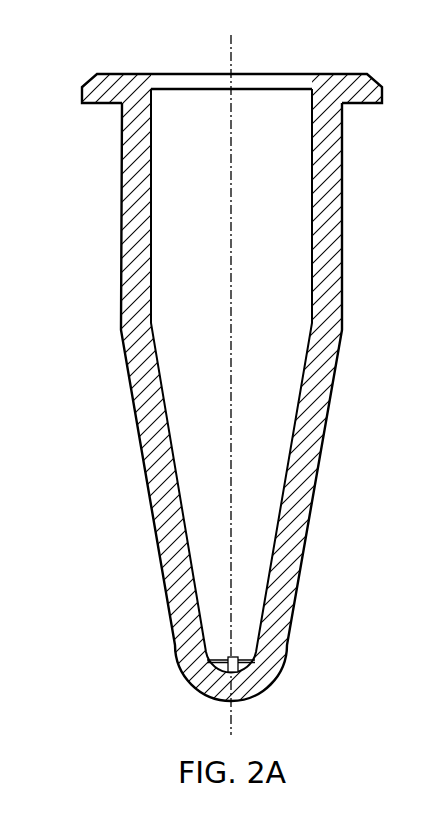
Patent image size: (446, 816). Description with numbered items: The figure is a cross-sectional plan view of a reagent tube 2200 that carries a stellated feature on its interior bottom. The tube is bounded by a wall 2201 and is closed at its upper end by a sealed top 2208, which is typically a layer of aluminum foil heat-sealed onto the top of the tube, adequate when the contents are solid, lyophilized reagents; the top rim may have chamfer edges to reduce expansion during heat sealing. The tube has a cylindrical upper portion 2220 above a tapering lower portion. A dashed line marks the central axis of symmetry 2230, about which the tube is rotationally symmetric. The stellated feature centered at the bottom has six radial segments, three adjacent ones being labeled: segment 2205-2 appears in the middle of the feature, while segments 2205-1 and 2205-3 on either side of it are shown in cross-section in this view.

The reagent tube 2200 is at (108, 504).
The wall 2201 is at (325, 340).
The sealed top 2208 is at (270, 82).
The cylindrical upper portion 2220 is at (325, 188).
The central axis of symmetry 2230 is at (228, 58).
The radial segment 2205-1 is at (218, 663).
The radial segment 2205-2 is at (232, 674).
The radial segment 2205-3 is at (248, 660).